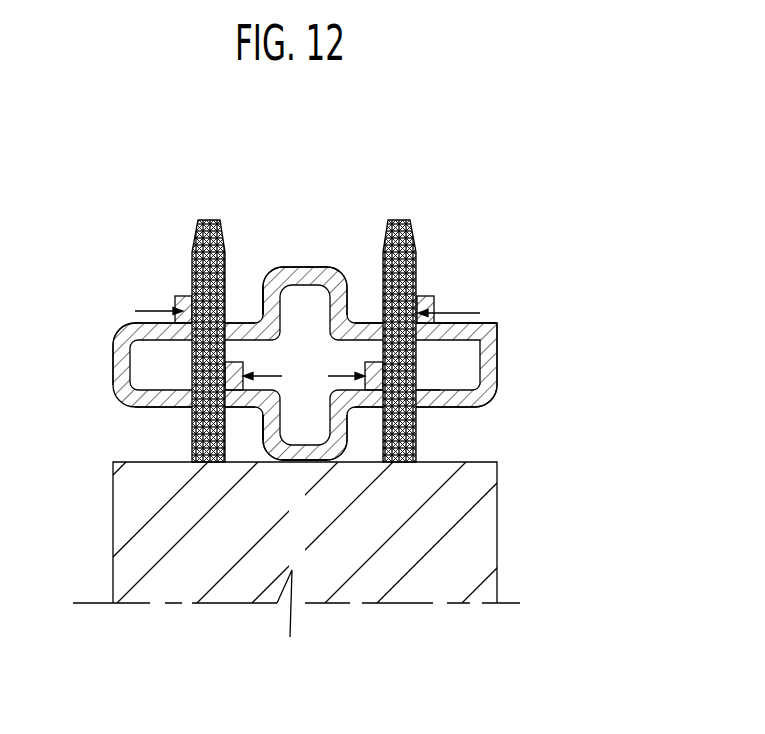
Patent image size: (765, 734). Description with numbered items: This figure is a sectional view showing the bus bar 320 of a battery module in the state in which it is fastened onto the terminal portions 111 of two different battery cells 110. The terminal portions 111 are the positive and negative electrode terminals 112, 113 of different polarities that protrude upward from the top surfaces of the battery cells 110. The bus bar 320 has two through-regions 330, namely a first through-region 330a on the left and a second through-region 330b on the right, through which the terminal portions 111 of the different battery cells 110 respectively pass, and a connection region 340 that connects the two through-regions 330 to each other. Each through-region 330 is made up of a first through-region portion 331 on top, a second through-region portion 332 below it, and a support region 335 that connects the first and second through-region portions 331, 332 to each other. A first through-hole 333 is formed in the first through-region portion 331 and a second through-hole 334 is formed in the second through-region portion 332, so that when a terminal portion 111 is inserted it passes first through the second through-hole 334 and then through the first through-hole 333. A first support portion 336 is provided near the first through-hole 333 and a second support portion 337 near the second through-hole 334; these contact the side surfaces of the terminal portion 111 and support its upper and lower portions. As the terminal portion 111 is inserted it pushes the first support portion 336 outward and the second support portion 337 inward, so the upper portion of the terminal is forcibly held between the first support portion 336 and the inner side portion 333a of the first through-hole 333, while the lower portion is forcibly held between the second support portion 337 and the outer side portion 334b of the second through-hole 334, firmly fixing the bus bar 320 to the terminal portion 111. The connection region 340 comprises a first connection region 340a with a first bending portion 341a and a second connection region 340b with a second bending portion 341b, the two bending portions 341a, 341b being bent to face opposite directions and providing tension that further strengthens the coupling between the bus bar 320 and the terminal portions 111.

The battery cell 110 is at (115, 519).
The terminal portion 111 is at (299, 282).
The positive electrode terminal 112 is at (210, 220).
The negative electrode terminal 113 is at (394, 301).
The bus bar 320 is at (106, 300).
The through-region 330 is at (594, 290).
The first through-region 330a is at (155, 432).
The second through-region 330b is at (455, 424).
The first through-region portion 331 is at (478, 315).
The second through-region portion 332 is at (469, 416).
The first through-hole 333 is at (467, 310).
The inner side portion of the first through-hole 333a is at (383, 315).
The second through-hole 334 is at (393, 405).
The outer side portion of the second through-hole 334b is at (406, 407).
The support region 335 is at (509, 356).
The first support portion 336 is at (423, 297).
The second support portion 337 is at (338, 462).
The connection region 340 is at (267, 685).
The first connection region 340a is at (253, 291).
The second connection region 340b is at (275, 472).
The first bending portion 341a is at (298, 268).
The second bending portion 341b is at (316, 451).